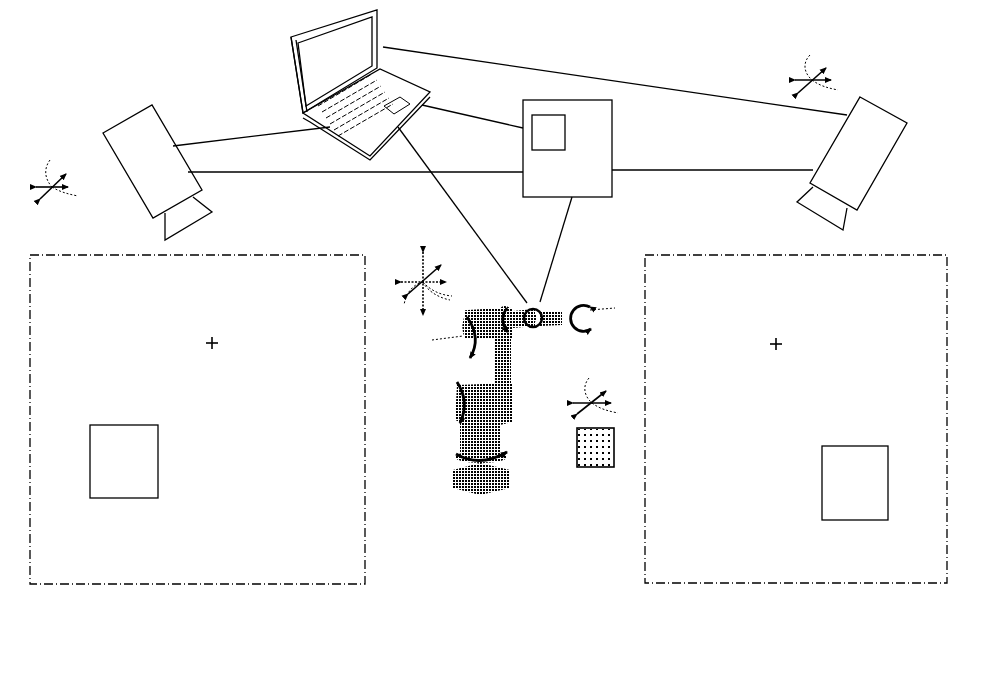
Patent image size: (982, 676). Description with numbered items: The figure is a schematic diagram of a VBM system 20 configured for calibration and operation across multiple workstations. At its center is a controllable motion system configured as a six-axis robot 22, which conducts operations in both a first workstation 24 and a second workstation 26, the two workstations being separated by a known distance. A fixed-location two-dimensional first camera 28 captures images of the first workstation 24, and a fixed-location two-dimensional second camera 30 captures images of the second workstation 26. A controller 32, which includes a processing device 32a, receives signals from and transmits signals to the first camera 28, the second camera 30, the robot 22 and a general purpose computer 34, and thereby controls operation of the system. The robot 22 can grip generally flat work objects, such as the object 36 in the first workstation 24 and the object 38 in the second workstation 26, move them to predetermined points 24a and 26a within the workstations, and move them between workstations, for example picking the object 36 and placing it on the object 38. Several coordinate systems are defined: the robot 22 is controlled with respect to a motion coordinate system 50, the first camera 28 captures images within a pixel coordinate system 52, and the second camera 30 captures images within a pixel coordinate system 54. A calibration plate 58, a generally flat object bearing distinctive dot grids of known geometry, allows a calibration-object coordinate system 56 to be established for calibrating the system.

The VBM system 20 is at (161, 44).
The six-axis robot 22 is at (482, 508).
The first workstation 24 is at (200, 585).
The predetermined point 24a is at (215, 350).
The second workstation 26 is at (697, 583).
The predetermined point 26a is at (781, 339).
The first camera 28 is at (167, 123).
The second camera 30 is at (885, 111).
The controller 32 is at (612, 155).
The processing device 32a is at (566, 122).
The general purpose computer 34 is at (296, 72).
The flat object 36 is at (158, 470).
The flat object 38 is at (822, 493).
The motion coordinate system 50 is at (403, 330).
The pixel coordinate system 52 is at (57, 130).
The pixel coordinate system 54 is at (778, 67).
The calibration-object coordinate system 56 is at (574, 389).
The calibration plate 58 is at (597, 468).